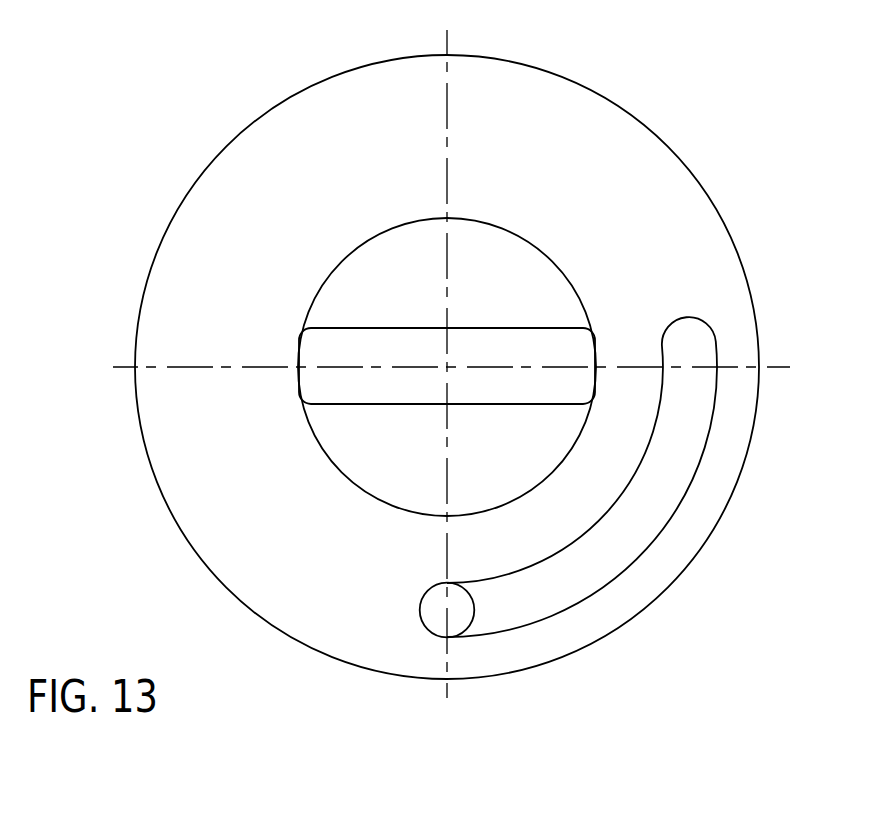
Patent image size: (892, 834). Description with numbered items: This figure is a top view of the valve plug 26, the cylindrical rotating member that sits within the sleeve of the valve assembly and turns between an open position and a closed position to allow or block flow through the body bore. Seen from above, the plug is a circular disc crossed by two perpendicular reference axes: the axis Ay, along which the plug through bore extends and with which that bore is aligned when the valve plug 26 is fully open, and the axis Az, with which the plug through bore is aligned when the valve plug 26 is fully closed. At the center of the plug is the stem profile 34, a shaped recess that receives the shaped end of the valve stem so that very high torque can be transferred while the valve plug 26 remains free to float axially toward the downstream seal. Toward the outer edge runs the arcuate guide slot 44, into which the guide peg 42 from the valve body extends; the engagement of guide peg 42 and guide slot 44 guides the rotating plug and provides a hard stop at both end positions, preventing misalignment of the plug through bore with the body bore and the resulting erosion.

The valve plug 26 is at (645, 167).
The stem profile 34 is at (505, 328).
The guide peg 42 is at (460, 617).
The guide slot 44 is at (572, 603).
The axis Az is at (447, 108).
The axis Ay is at (188, 365).